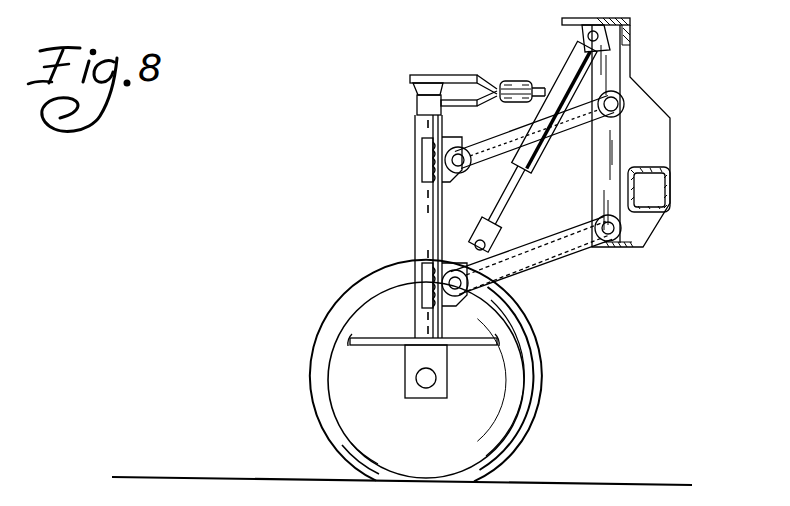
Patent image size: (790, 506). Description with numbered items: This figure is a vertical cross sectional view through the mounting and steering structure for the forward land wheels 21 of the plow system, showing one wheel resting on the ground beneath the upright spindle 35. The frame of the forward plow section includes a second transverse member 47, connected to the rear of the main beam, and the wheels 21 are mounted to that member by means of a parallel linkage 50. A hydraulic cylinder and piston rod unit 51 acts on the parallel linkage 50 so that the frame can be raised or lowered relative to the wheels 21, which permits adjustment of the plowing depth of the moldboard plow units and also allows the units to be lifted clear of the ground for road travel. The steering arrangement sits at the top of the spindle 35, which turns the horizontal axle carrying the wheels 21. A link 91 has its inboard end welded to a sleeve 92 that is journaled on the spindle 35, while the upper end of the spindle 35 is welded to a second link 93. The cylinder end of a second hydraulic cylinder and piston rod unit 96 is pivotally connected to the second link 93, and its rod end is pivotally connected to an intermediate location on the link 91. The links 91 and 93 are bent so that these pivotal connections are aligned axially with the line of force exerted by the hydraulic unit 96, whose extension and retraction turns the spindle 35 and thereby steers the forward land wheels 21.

The forward land wheels 21 is at (538, 411).
The spindle 35 is at (415, 121).
The second transverse member 47 is at (672, 188).
The parallel linkage 50 is at (562, 266).
The hydraulic cylinder and piston rod unit 51 is at (530, 162).
The link 91 is at (457, 108).
The sleeve 92 is at (414, 100).
The second link 93 is at (476, 42).
The hydraulic cylinder and piston rod unit 96 is at (515, 81).